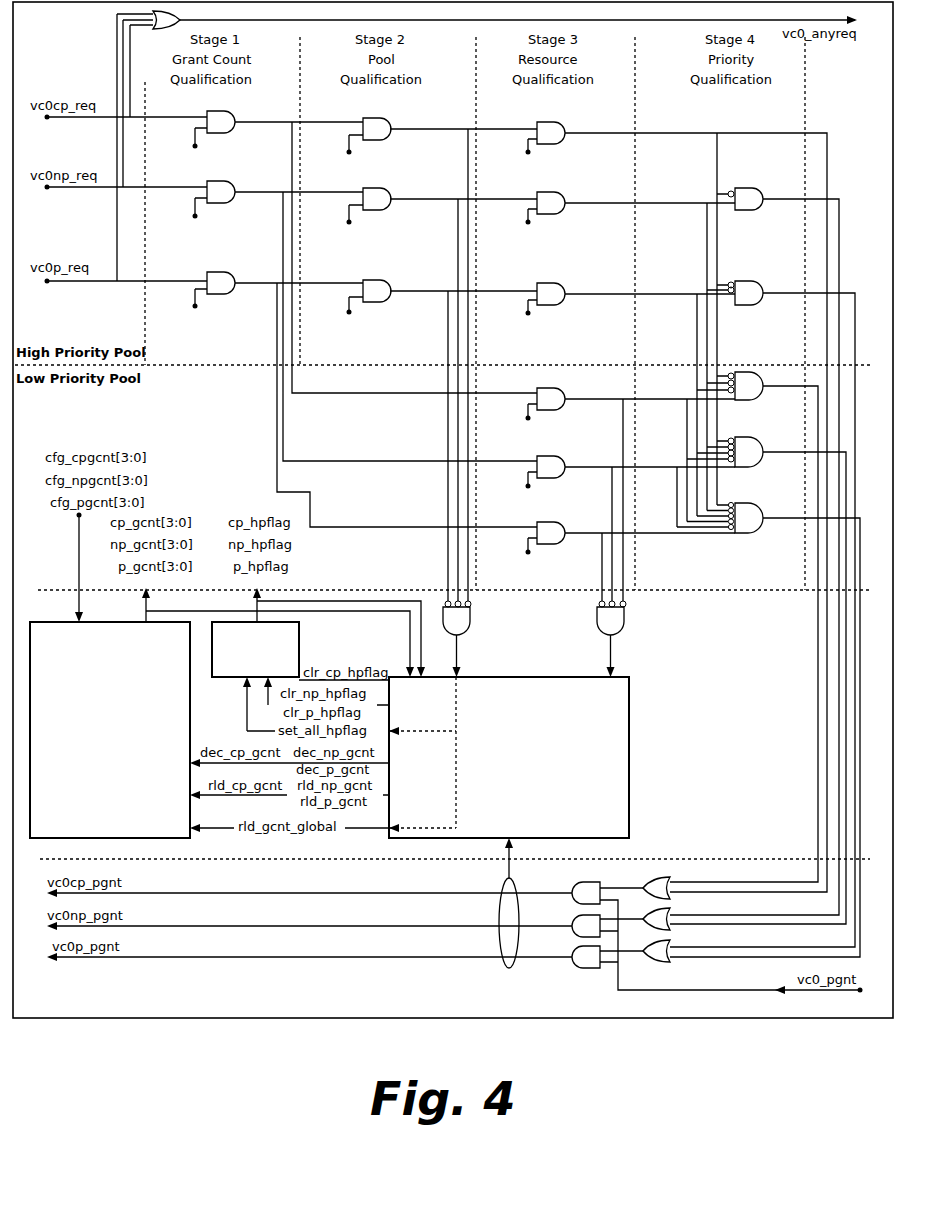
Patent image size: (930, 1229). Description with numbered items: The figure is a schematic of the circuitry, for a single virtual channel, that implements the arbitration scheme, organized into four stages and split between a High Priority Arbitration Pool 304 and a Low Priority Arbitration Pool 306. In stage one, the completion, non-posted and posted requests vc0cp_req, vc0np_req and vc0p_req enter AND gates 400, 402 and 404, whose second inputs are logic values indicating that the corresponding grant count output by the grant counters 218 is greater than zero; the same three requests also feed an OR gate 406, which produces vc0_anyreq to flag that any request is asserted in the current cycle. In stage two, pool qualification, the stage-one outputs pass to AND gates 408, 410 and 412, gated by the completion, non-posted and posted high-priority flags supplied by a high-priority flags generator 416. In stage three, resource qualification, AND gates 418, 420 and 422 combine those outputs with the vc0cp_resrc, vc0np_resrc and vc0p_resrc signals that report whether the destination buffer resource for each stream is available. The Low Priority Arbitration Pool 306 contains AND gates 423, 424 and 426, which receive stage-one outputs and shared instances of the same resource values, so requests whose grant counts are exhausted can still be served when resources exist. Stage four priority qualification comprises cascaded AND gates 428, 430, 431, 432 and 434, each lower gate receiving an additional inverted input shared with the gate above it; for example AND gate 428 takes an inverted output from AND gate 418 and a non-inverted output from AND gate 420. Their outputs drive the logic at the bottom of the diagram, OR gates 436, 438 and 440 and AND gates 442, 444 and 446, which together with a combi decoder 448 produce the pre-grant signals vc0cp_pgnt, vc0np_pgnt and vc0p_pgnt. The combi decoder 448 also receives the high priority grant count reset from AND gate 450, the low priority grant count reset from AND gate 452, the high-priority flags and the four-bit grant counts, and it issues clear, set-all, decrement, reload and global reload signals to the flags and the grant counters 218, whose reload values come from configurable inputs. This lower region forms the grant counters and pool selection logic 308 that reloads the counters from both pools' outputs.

The High Priority Arbitration Pool 304 is at (55, 26).
The OR gate 406 is at (160, 36).
The AND gate 400 is at (233, 121).
The AND gate 402 is at (233, 191).
The AND gate 404 is at (238, 265).
The AND gate 408 is at (389, 124).
The AND gate 410 is at (389, 194).
The AND gate 412 is at (389, 286).
The AND gate 418 is at (565, 140).
The AND gate 420 is at (565, 210).
The AND gate 422 is at (565, 301).
The AND gate 423 is at (556, 390).
The AND gate 424 is at (556, 458).
The AND gate 426 is at (556, 524).
The AND gate 428 is at (748, 211).
The AND gate 430 is at (748, 306).
The AND gate 431 is at (746, 401).
The AND gate 432 is at (746, 468).
The AND gate 434 is at (746, 534).
The Low Priority Arbitration Pool 306 is at (55, 584).
The high-priority flags generator 416 is at (299, 648).
The AND gate 450 is at (470, 622).
The AND gate 452 is at (624, 622).
The combi decoder 448 is at (629, 760).
The grant counters 218 is at (66, 835).
The grant counters and pool selection logic 308 is at (798, 854).
The AND gate 442 is at (580, 886).
The AND gate 444 is at (580, 933).
The AND gate 446 is at (578, 964).
The OR gate 436 is at (666, 897).
The OR gate 438 is at (666, 928).
The OR gate 440 is at (666, 960).